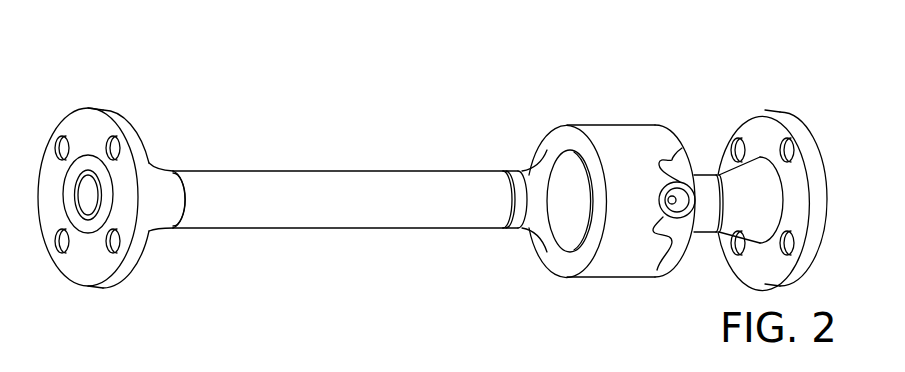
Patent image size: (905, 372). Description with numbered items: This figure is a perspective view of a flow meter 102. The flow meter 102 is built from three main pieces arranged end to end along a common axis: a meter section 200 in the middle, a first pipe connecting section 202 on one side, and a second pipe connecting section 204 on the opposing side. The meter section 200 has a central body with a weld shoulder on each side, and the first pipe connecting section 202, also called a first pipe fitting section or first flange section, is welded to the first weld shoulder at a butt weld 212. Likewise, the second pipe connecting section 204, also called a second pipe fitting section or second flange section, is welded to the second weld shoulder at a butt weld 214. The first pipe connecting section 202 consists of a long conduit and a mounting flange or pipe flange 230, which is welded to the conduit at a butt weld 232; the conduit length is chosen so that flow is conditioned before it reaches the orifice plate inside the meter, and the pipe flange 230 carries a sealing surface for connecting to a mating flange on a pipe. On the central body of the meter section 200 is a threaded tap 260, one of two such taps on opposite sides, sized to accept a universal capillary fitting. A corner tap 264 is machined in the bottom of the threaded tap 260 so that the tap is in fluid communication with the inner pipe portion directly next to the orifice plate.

The flow meter 102 is at (466, 66).
The meter section 200 is at (628, 110).
The first pipe connecting section 202 is at (355, 141).
The second pipe connecting section 204 is at (790, 92).
The butt weld 212 is at (502, 229).
The butt weld 214 is at (696, 233).
The pipe flange 230 is at (120, 121).
The butt weld 232 is at (153, 232).
The threaded tap 260 is at (683, 148).
The corner tap 264 is at (671, 212).